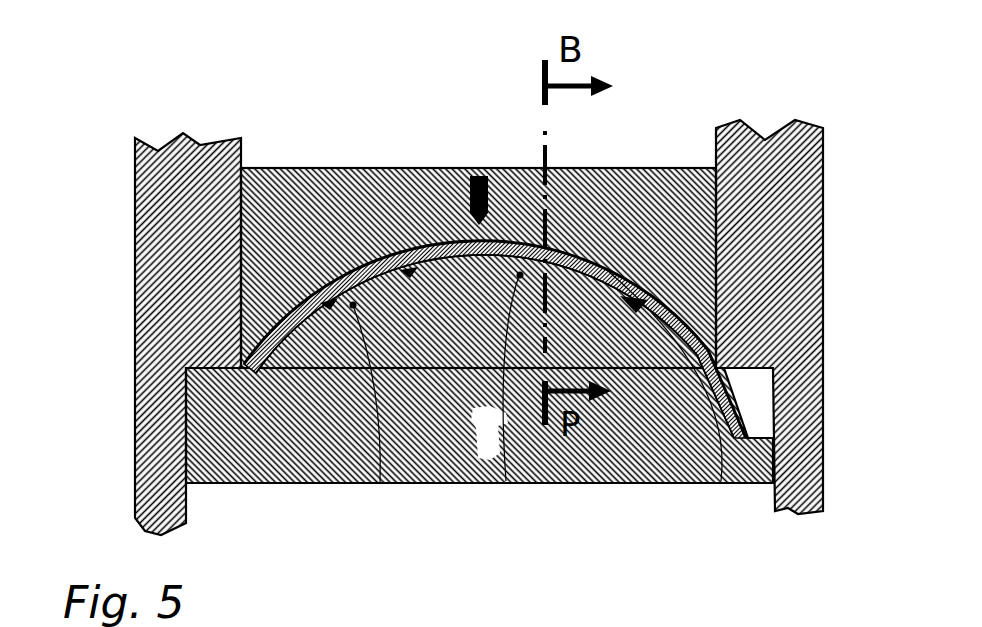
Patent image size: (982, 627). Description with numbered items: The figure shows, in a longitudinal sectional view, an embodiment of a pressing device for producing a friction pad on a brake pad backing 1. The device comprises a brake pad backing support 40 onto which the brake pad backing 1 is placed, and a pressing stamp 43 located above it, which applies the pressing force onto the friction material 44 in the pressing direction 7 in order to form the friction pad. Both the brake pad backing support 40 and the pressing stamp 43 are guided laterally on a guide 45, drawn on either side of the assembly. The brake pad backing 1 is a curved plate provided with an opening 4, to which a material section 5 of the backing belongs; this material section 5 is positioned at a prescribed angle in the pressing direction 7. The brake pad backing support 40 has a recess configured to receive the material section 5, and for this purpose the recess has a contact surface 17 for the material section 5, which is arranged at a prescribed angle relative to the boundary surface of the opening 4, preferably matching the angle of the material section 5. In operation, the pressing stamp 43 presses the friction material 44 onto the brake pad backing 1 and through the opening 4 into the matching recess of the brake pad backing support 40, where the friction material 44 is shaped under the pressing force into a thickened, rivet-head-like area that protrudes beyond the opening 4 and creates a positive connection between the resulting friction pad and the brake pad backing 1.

The brake pad backing 1 is at (713, 473).
The opening 4 is at (645, 292).
The material section 5 is at (660, 305).
The pressing direction 7 is at (445, 177).
The contact surface 17 is at (372, 475).
The brake pad backing support 40 is at (605, 432).
The pressing stamp 43 is at (645, 210).
The friction material 44 is at (600, 258).
The guide 45 is at (185, 150).